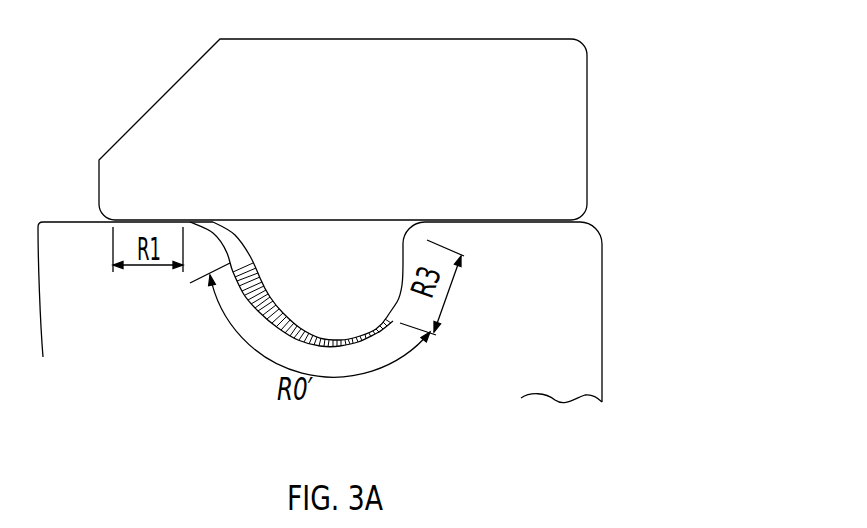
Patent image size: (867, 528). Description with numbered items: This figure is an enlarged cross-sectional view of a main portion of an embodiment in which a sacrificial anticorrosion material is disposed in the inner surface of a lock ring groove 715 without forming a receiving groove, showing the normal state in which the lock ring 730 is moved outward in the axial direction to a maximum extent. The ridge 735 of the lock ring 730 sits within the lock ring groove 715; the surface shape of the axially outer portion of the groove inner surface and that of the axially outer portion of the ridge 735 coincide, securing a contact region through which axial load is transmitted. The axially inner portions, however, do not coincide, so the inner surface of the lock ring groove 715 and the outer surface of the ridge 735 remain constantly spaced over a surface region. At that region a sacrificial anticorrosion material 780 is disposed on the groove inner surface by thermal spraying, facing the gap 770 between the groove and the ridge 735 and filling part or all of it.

The lock ring 730 is at (590, 90).
The ridge 735 is at (376, 272).
The lock ring groove 715 is at (371, 318).
The gap 770 is at (250, 280).
The sacrificial anticorrosion material 780 is at (270, 313).